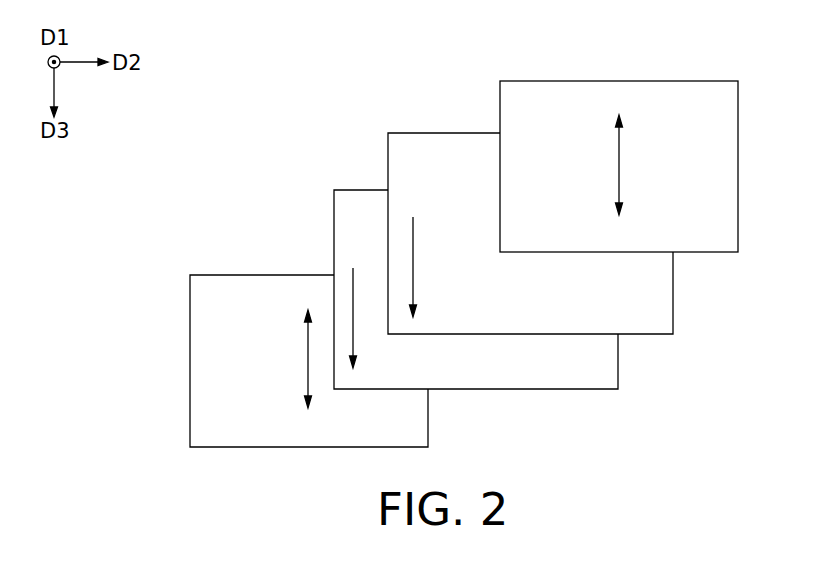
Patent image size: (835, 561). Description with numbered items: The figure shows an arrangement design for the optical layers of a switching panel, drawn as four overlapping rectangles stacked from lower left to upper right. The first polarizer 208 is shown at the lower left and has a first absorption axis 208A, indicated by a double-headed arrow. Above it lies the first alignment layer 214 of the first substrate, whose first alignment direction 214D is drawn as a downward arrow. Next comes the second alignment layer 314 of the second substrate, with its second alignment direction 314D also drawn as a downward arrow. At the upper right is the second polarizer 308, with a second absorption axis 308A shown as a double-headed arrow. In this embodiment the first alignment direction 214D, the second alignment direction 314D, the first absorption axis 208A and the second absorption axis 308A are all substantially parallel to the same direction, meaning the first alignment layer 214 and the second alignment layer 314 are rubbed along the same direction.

The first polarizer 208 is at (417, 432).
The first absorption axis 208A is at (307, 352).
The first alignment layer 214 is at (606, 377).
The first alignment direction 214D is at (353, 336).
The second alignment layer 314 is at (658, 313).
The second alignment direction 314D is at (413, 280).
The second polarizer 308 is at (723, 117).
The second absorption axis 308A is at (620, 160).